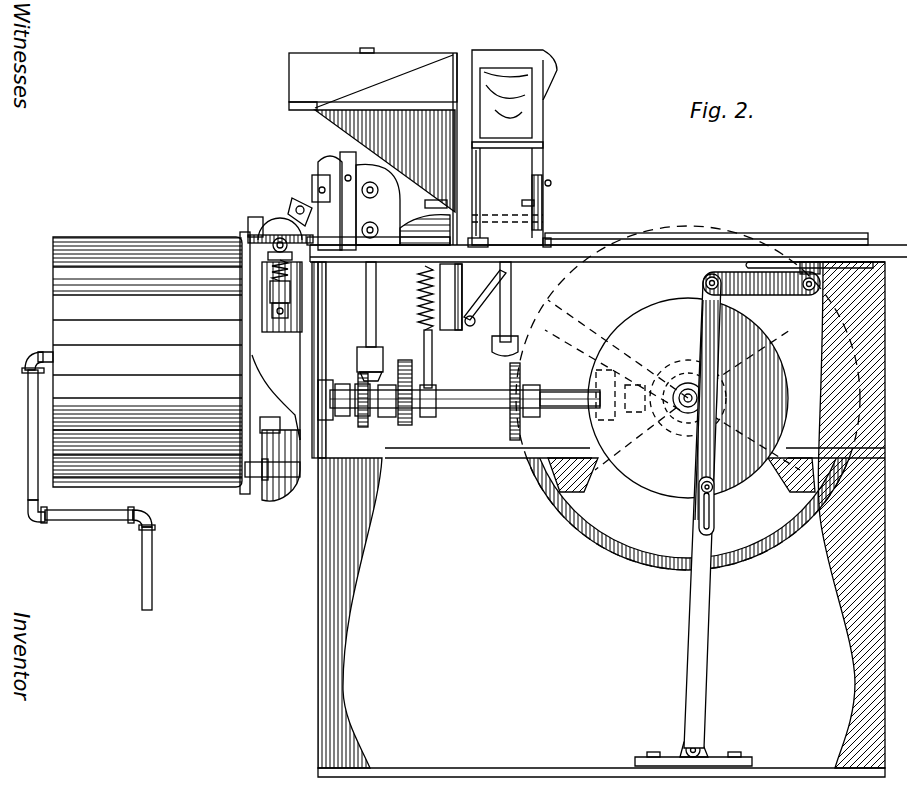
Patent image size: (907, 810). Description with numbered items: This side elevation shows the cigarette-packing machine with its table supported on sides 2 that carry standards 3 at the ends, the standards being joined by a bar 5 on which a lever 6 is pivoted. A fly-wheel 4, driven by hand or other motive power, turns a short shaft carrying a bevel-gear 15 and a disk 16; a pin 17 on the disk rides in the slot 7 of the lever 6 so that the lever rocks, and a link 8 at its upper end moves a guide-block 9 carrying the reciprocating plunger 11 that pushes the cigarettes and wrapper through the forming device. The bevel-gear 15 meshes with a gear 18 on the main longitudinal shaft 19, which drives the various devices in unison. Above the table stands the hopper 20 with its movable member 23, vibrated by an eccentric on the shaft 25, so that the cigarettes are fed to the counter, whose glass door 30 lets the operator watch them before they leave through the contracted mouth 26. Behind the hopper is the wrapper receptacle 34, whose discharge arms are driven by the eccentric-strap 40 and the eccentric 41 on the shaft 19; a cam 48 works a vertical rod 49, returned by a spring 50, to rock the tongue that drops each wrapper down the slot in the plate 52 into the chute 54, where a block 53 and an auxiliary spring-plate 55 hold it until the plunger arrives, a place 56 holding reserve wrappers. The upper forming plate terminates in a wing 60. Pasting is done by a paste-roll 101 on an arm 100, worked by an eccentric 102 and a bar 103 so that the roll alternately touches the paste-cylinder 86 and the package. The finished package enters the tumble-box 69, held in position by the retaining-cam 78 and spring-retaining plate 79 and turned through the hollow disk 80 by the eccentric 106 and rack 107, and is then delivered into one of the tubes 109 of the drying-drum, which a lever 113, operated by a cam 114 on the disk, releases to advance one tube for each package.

The sides 2 is at (688, 398).
The standards 3 is at (360, 607).
The fly-wheel 4 is at (573, 534).
The bar 5 is at (786, 767).
The lever 6 is at (701, 637).
The slot 7 is at (714, 511).
The link 8 is at (773, 291).
The guide-block 9 is at (874, 251).
The reciprocating plunger 11 is at (612, 243).
The bevel-gear 15 is at (680, 383).
The disk 16 is at (745, 467).
The pin 17 is at (700, 491).
The gear 18 is at (661, 432).
The main longitudinal shaft 19 is at (575, 406).
The hopper 20 is at (512, 133).
The movable member 23 is at (521, 118).
The shaft 25 is at (279, 460).
The contracted mouth 26 is at (471, 240).
The glass door 30 is at (545, 212).
The receptacle 34 is at (373, 79).
The eccentric-strap 40 is at (404, 383).
The eccentric 41 is at (409, 421).
The cam 48 is at (436, 386).
The vertical rod 49 is at (433, 348).
The spring 50 is at (417, 296).
The plate 52 is at (471, 161).
The block 53 is at (484, 325).
The chute 54 is at (473, 297).
The auxiliary spring-plate 55 is at (512, 292).
The place 56 is at (414, 110).
The wing 60 is at (392, 237).
The tumble-box 69 is at (240, 235).
The retaining-cam 78 is at (275, 256).
The spring-retaining plate 79 is at (286, 262).
The hollow disk 80 is at (284, 236).
The paste-cylinder 86 is at (379, 187).
The arm 100 is at (293, 206).
The paste-roll 101 is at (301, 200).
The eccentric 102 is at (325, 420).
The bar 103 is at (358, 405).
The eccentric 106 is at (274, 433).
The rack 107 is at (256, 222).
The tubes 109 is at (147, 362).
The lever 113 is at (275, 478).
The cam 114 is at (283, 400).